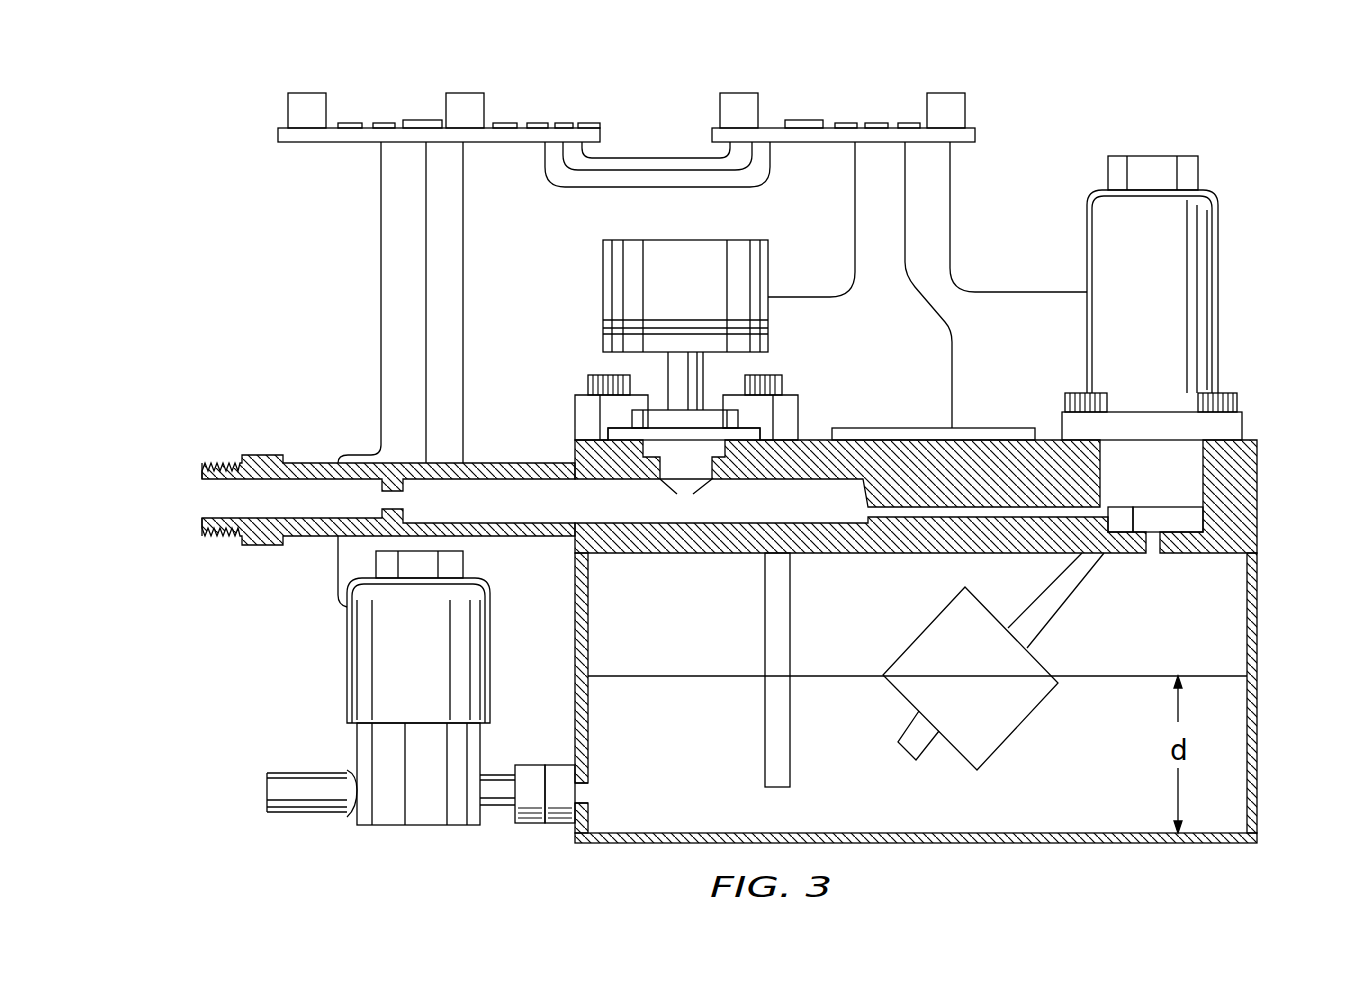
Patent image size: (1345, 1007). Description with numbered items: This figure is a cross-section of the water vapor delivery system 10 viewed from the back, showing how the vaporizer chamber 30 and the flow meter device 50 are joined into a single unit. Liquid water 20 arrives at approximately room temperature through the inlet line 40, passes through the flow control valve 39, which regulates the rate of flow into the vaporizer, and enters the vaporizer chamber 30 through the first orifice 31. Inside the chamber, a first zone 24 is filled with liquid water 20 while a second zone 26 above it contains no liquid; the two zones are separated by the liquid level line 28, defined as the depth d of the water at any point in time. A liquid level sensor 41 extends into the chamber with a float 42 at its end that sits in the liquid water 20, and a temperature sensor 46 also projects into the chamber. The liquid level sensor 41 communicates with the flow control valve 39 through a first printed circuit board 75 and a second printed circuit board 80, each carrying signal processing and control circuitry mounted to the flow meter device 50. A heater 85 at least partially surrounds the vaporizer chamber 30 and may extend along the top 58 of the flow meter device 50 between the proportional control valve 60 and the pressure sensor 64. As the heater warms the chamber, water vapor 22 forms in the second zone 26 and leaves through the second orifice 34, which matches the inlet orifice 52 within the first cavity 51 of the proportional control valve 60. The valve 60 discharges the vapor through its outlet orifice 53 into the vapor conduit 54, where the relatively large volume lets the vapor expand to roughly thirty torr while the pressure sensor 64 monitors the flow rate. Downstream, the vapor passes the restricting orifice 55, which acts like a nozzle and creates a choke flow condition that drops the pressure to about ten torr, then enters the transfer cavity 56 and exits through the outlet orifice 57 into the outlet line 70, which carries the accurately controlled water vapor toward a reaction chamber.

The water vapor delivery system 10 is at (1218, 122).
The liquid water 20 is at (878, 804).
The water vapor 22 is at (906, 596).
The first zone 24 is at (1061, 789).
The second zone 26 is at (703, 609).
The liquid level line 28 is at (690, 676).
The vaporizer chamber 30 is at (1266, 621).
The first orifice 31 is at (596, 790).
The second orifice 34 is at (1153, 553).
The flow control valve 39 is at (347, 634).
The inlet line 40 is at (497, 768).
The liquid level sensor 41 is at (1080, 598).
The float 42 is at (1040, 660).
The temperature sensor 46 is at (790, 640).
The flow meter device 50 is at (815, 432).
The first cavity 51 is at (1105, 553).
The inlet orifice 52 is at (1150, 530).
The outlet orifice 53 is at (1110, 507).
The vapor conduit 54 is at (776, 510).
The restricting orifice 55 is at (400, 490).
The transfer cavity 56 is at (308, 512).
The outlet orifice 57 is at (200, 506).
The top 58 is at (1047, 440).
The proportional control valve 60 is at (1218, 262).
The pressure sensor 64 is at (768, 285).
The outlet line 70 is at (301, 452).
The first printed circuit board 75 is at (776, 122).
The second printed circuit board 80 is at (397, 122).
The heater 85 is at (975, 428).